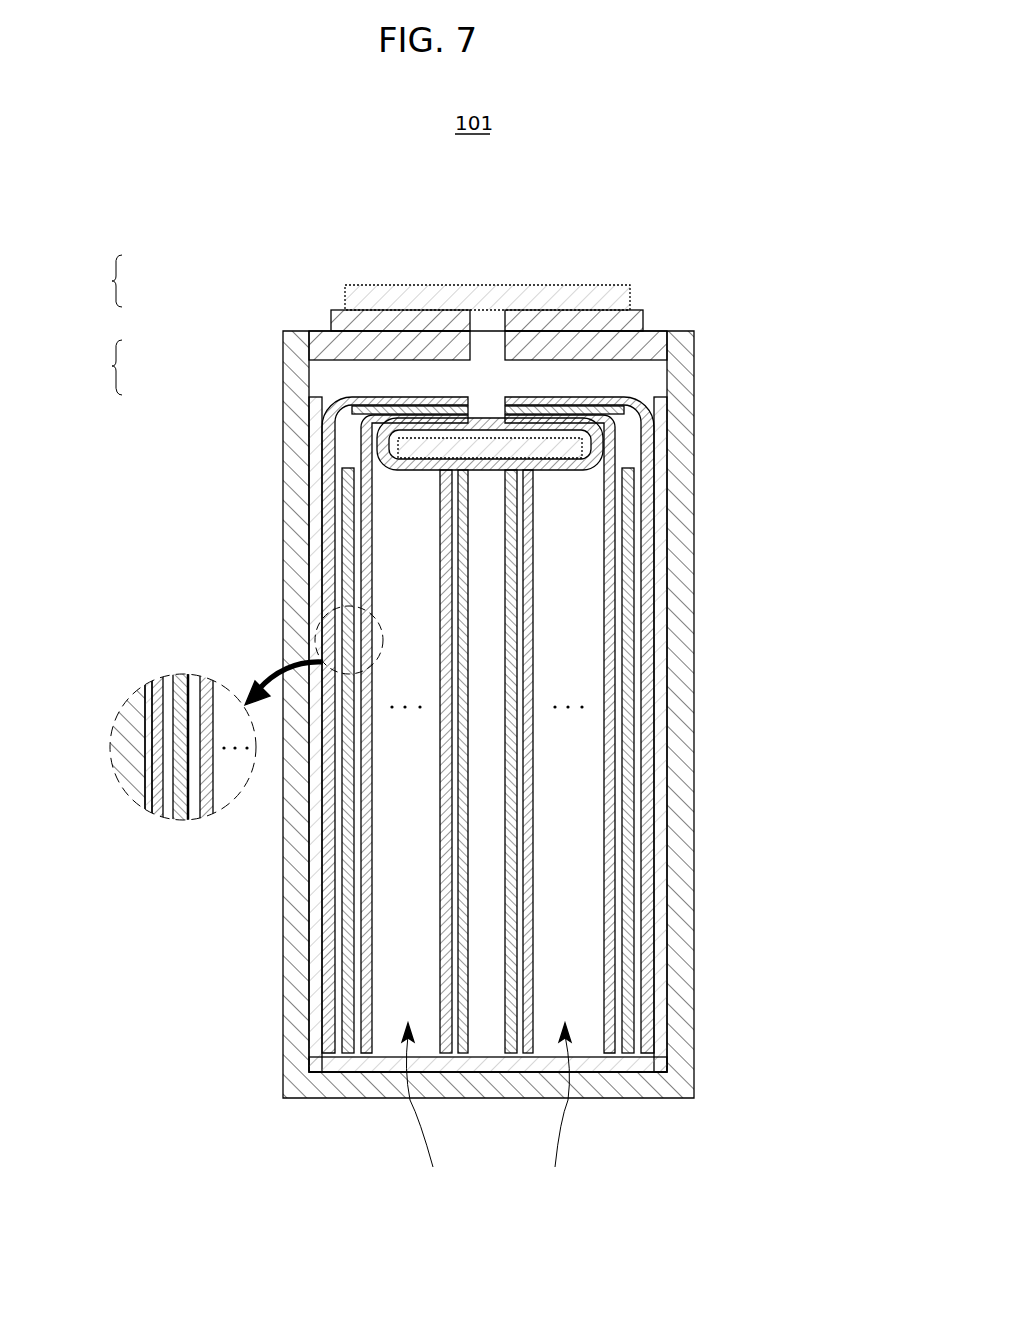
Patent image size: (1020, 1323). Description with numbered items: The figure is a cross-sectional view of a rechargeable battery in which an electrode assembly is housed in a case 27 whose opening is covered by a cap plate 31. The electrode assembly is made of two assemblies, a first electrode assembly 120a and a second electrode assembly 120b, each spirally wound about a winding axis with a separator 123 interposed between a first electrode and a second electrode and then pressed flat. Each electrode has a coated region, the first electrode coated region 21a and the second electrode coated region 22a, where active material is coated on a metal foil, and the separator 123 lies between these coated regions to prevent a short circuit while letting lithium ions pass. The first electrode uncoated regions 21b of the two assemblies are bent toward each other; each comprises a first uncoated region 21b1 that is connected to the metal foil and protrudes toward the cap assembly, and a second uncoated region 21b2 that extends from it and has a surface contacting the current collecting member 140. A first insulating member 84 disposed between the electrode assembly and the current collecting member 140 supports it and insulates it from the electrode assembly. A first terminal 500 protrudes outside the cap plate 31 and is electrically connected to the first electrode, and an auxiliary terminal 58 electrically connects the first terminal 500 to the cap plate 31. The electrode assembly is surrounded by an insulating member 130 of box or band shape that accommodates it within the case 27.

The insulating member 130 is at (680, 692).
The cap plate 31 is at (650, 350).
The auxiliary terminal 58 is at (637, 320).
The first terminal 500 is at (472, 300).
The separator 123 is at (335, 1013).
The first electrode coated region 21a is at (325, 1005).
The first electrode uncoated region 21b is at (415, 208).
The first uncoated region 21b1 is at (360, 450).
The second uncoated region 21b2 is at (408, 448).
The second electrode coated region 22a is at (348, 1047).
The current collecting member 140 is at (585, 447).
The first insulating member 84 is at (545, 455).
The case 27 is at (493, 1087).
The first electrode assembly 120a is at (431, 1112).
The second electrode assembly 120b is at (563, 1112).